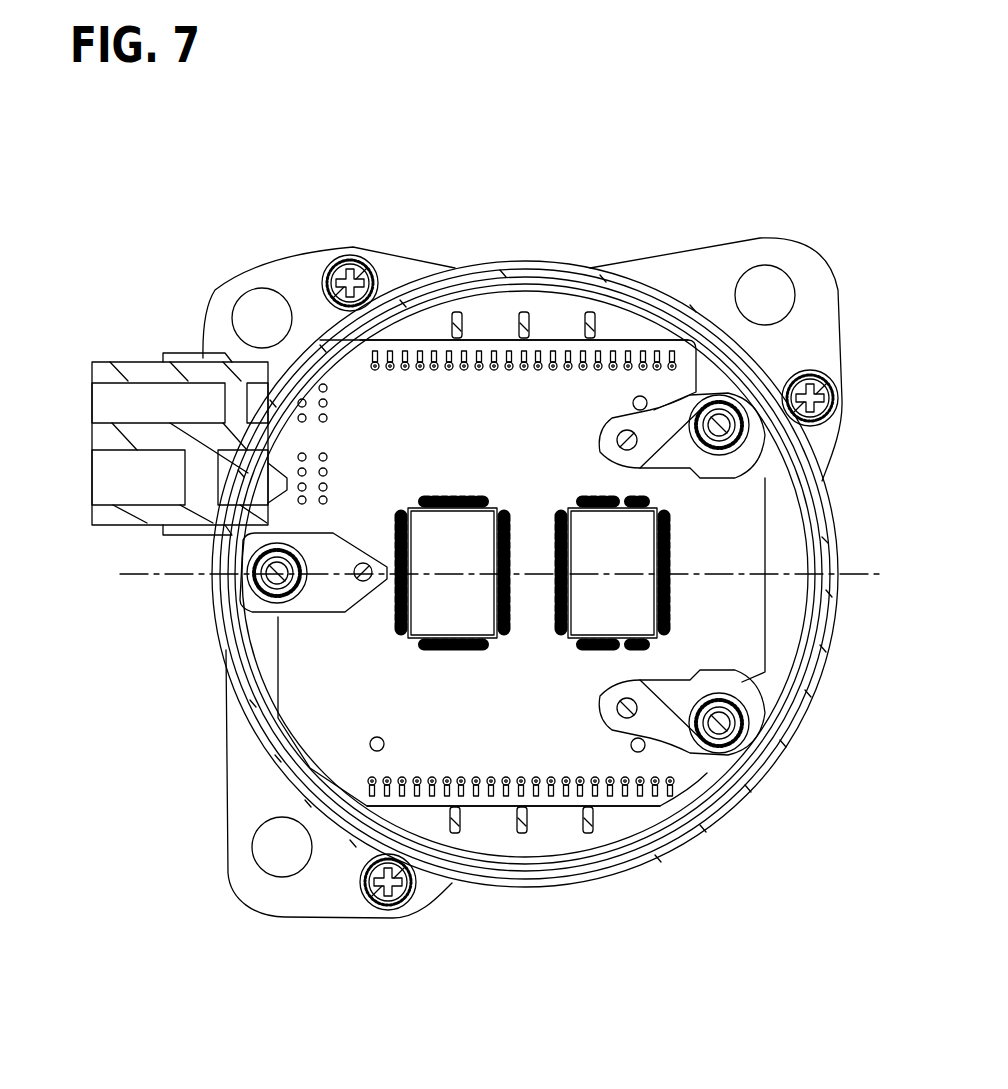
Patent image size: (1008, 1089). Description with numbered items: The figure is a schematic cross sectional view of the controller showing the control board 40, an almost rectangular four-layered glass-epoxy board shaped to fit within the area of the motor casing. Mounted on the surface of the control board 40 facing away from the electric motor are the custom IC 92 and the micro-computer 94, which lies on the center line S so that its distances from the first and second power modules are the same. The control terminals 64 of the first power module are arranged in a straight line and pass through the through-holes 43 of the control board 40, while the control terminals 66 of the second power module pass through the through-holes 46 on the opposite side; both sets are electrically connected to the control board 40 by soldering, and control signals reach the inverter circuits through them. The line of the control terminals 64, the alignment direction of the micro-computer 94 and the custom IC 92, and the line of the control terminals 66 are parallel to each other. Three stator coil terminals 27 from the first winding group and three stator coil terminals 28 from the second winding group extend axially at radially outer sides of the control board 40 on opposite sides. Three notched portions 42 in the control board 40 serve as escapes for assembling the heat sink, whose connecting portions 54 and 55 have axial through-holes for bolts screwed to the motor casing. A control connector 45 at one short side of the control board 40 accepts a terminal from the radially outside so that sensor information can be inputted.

The control board 40 is at (367, 393).
The through-holes 43 is at (388, 352).
The control terminals 64 is at (405, 352).
The stator coil terminals 27 is at (458, 312).
The notched portions 42 is at (707, 392).
The control connector 45 is at (92, 430).
The connecting portion 55 is at (757, 432).
The custom IC 92 is at (630, 532).
The micro-computer 94 is at (418, 617).
The connecting portion 54 is at (252, 600).
The center line S is at (133, 578).
The through-holes 46 is at (668, 784).
The control terminals 66 is at (680, 797).
The stator coil terminals 28 is at (455, 834).